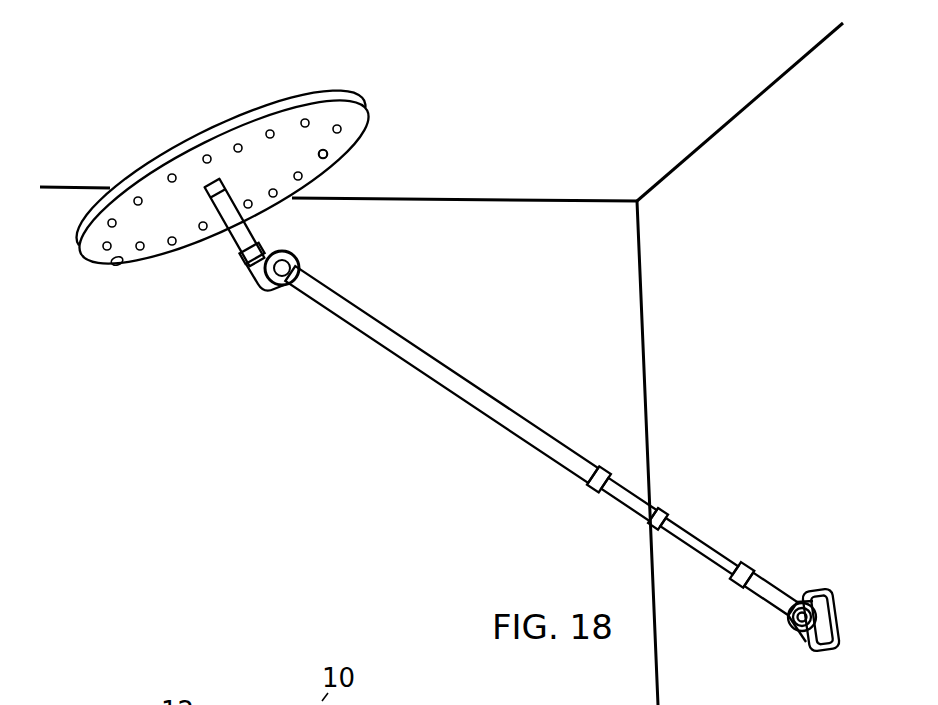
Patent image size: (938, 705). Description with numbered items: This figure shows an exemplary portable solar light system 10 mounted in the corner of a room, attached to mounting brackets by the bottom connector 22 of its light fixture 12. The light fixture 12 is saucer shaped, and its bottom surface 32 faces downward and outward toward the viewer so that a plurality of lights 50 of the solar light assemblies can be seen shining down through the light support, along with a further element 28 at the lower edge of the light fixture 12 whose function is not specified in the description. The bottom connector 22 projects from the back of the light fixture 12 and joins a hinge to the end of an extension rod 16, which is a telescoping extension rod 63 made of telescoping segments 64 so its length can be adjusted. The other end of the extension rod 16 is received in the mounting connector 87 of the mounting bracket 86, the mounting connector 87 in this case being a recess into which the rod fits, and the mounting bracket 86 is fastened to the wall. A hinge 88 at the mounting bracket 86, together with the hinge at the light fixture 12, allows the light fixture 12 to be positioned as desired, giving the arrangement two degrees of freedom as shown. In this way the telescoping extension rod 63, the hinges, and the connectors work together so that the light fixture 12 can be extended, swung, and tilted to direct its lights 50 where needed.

The portable solar light system 10 is at (158, 148).
The light fixture 12 is at (302, 100).
The bottom surface 32 is at (352, 128).
The light 50 is at (326, 157).
The nozzle / outlet 28 is at (100, 272).
The bottom connector 22 is at (208, 196).
The extension rod 16 is at (418, 355).
The telescoping extension rod 63 is at (535, 430).
The telescoping segments 64 is at (650, 497).
The mounting connector 87 is at (747, 567).
The mounting bracket 86 is at (760, 583).
The hinge 88 is at (792, 636).